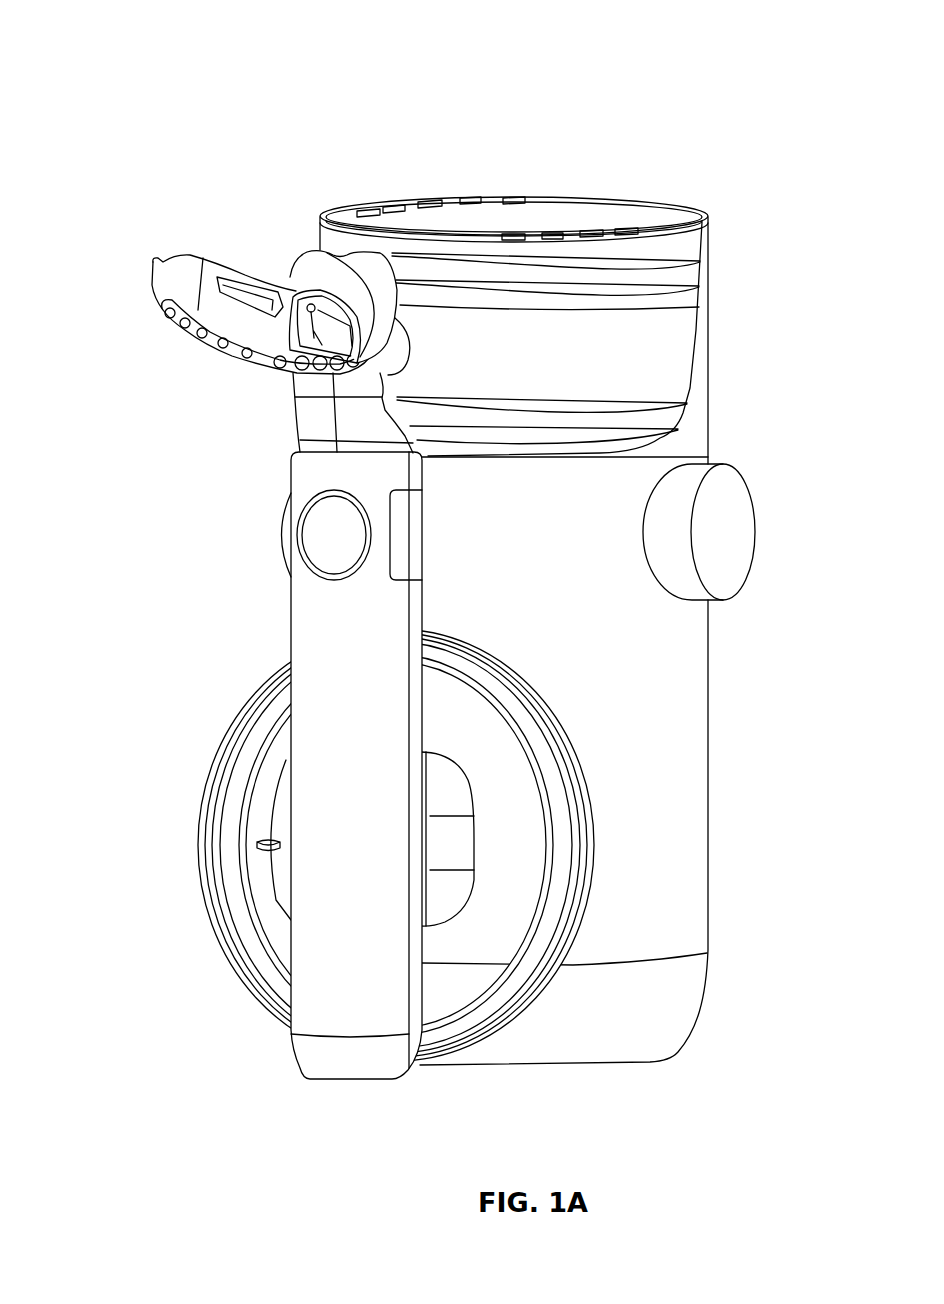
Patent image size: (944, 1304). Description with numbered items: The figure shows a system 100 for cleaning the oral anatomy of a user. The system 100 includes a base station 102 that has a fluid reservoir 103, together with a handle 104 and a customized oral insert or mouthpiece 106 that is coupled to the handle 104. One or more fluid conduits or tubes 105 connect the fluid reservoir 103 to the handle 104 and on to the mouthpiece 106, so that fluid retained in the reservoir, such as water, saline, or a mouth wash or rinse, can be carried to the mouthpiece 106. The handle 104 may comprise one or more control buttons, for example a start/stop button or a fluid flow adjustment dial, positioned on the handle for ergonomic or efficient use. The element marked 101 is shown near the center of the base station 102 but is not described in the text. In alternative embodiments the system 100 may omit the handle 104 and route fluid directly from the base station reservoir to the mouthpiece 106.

The system 100 is at (224, 58).
The central hub 101 is at (492, 893).
The base station 102 is at (788, 272).
The fluid reservoir 103 is at (718, 410).
The handle 104 is at (380, 778).
The fluid conduits or tubes 105 is at (166, 806).
The customized oral insert or mouthpiece 106 is at (155, 224).